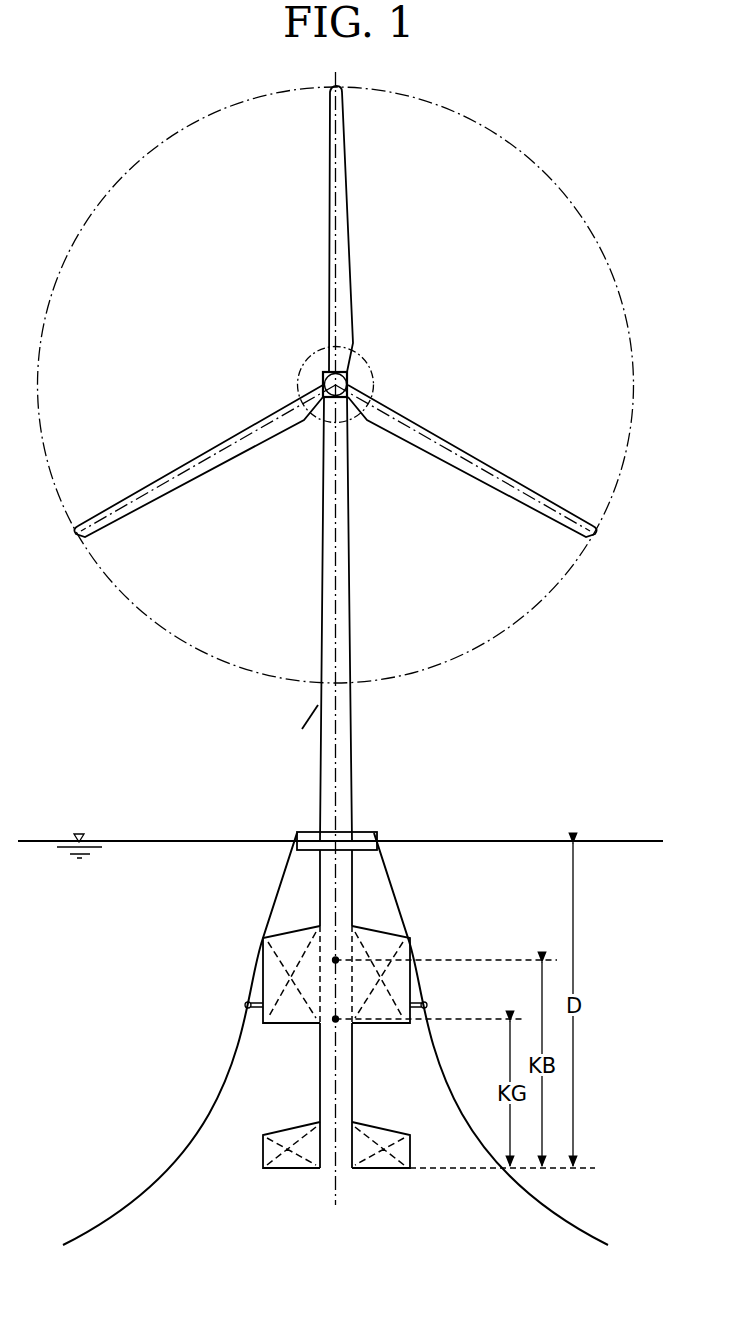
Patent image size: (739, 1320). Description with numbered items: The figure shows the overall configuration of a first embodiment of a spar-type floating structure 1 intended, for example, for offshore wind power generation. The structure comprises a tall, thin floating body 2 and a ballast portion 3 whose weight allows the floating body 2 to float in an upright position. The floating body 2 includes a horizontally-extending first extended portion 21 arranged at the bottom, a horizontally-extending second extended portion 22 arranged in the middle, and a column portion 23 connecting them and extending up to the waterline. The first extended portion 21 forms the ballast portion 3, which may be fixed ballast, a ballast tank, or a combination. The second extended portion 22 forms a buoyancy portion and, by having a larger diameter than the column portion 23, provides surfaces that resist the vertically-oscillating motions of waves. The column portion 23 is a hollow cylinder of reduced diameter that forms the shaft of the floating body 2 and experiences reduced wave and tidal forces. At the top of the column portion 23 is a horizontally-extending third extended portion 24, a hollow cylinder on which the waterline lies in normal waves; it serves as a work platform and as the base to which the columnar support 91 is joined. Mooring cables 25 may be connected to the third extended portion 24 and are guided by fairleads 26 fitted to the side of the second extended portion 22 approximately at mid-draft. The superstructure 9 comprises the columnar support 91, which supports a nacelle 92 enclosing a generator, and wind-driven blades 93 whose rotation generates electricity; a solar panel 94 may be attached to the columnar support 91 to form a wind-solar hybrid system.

The spar-type floating structure 1 is at (90, 659).
The floating body 2 is at (250, 918).
The ballast portion 3 is at (262, 1176).
The superstructure 9 is at (463, 346).
The first extended portion 21 is at (383, 1168).
The second extended portion 22 is at (380, 1025).
The column portion 23 is at (320, 905).
The third extended portion 24 is at (300, 832).
The mooring cables 25 is at (400, 888).
The fairleads 26 is at (245, 1004).
The columnar support 91 is at (352, 767).
The nacelle 92 is at (320, 372).
The blades 93 is at (345, 243).
The solar panel 94 is at (298, 716).